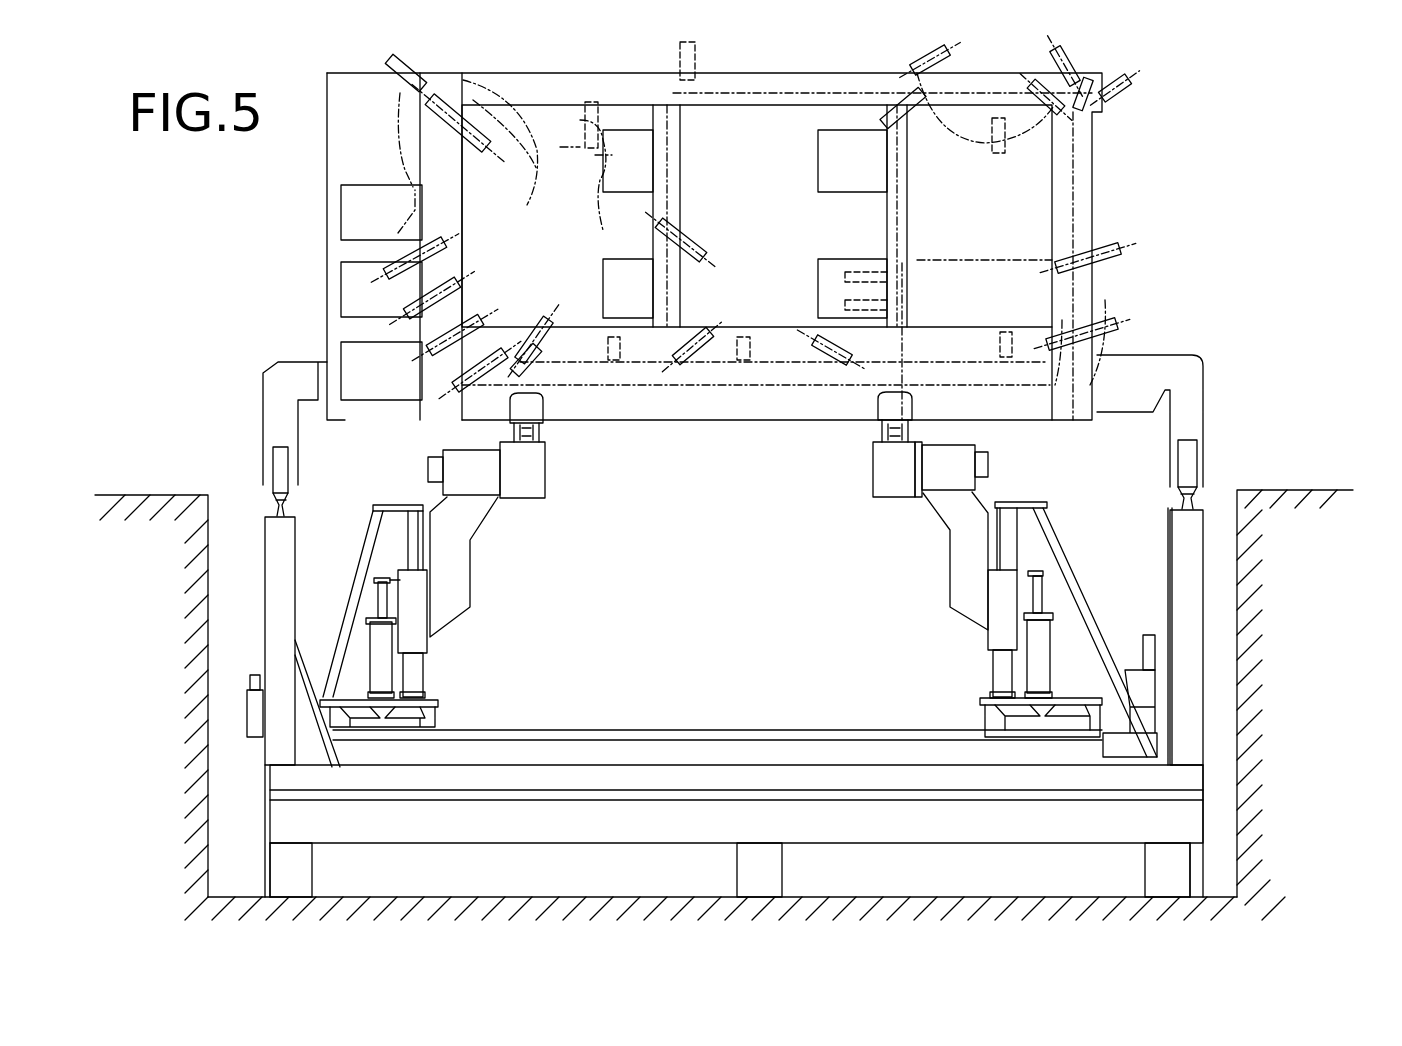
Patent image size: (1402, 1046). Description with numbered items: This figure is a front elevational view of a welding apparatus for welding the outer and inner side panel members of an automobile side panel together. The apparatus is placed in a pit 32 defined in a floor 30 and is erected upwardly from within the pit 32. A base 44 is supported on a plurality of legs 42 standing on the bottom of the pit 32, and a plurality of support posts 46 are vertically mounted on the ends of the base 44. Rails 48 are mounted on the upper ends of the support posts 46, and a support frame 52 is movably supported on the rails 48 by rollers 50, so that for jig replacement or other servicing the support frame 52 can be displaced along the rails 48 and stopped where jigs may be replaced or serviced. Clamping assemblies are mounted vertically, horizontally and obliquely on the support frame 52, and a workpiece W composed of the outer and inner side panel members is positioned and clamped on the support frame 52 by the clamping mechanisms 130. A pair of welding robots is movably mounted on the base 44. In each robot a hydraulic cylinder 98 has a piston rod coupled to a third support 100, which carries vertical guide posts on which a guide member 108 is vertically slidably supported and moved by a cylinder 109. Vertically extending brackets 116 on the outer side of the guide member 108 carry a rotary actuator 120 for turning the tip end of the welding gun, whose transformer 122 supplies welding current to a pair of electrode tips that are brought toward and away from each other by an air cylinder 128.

The floor 30 is at (724, 705).
The pit 32 is at (1210, 872).
The legs 42 is at (300, 875).
The base 44 is at (720, 762).
The support posts 46 is at (278, 586).
The rails 48 is at (285, 508).
The rollers 50 is at (272, 465).
The support frame 52 is at (327, 215).
The hydraulic cylinder 98 is at (390, 717).
The third support 100 is at (342, 567).
The guide member 108 is at (413, 638).
The cylinder 109 is at (385, 667).
The brackets 116 is at (452, 568).
The rotary actuator 120 is at (457, 457).
The transformer 122 is at (543, 493).
The air cylinder 128 is at (540, 415).
The clamping mechanism 130 is at (408, 60).
The workpiece W is at (1125, 202).